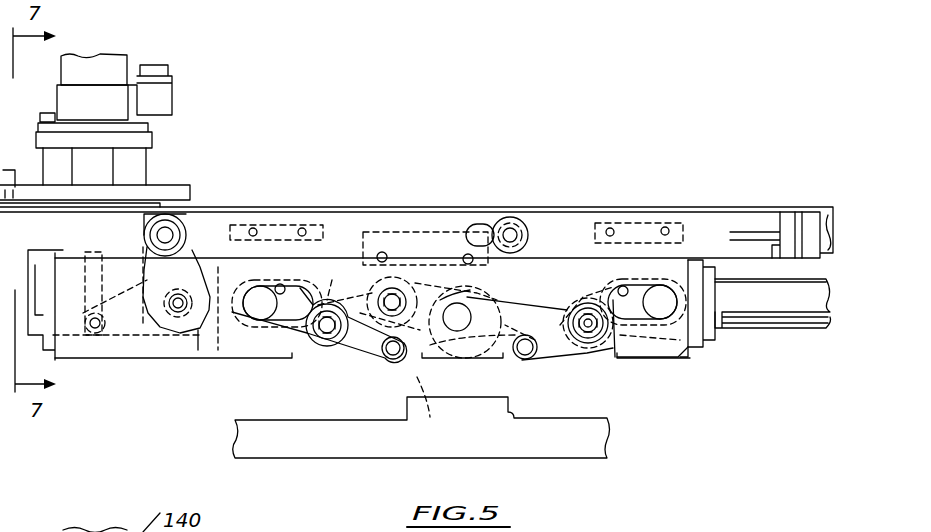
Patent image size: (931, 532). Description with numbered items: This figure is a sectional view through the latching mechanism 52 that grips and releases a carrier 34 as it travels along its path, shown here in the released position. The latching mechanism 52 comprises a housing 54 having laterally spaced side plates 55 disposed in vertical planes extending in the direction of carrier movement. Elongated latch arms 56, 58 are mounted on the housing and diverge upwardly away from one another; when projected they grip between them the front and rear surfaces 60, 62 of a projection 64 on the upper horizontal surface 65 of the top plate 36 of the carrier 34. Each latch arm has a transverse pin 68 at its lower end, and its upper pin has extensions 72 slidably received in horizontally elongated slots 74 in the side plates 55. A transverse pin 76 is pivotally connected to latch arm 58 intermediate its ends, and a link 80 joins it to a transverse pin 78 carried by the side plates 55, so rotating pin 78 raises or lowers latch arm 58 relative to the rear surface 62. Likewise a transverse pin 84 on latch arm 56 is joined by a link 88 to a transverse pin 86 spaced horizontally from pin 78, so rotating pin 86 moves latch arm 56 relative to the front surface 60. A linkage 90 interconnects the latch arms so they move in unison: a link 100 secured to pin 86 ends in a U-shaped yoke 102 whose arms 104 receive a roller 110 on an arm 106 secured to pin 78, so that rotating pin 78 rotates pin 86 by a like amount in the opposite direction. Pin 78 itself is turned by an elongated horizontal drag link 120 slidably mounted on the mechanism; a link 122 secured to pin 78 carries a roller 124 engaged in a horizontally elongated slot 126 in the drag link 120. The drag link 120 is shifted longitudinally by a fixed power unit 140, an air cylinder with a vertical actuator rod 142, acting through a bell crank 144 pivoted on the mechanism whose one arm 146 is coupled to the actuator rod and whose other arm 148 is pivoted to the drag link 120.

The carrier 34 is at (220, 447).
The top plate 36 is at (607, 440).
The latching mechanism 52 is at (575, 245).
The housing 54 is at (103, 350).
The side plates 55 is at (680, 355).
The latch arm 56 is at (377, 330).
The latch arm 58 is at (583, 357).
The front surface 60 is at (427, 398).
The rear surface 62 is at (515, 418).
The projection 64 is at (435, 405).
The upper horizontal surface 65 is at (260, 419).
The transverse pin 68 is at (522, 360).
The extensions 72 is at (253, 288).
The slots 74 is at (273, 293).
The transverse pin 76 is at (590, 298).
The transverse pin 78 is at (483, 226).
The link 80 is at (562, 262).
The transverse pin 84 is at (312, 337).
The transverse pin 86 is at (385, 298).
The link 88 is at (390, 352).
The linkage 90 is at (447, 270).
The link 100 is at (415, 275).
The yoke 102 is at (437, 402).
The arms 104 is at (472, 380).
The arm 106 is at (470, 347).
The roller 110 is at (417, 350).
The drag link 120 is at (192, 218).
The link 122 is at (541, 267).
The roller 124 is at (503, 222).
The slot 126 is at (482, 267).
The power unit 140 is at (133, 62).
The actuator rod 142 is at (72, 252).
The bell crank 144 is at (197, 347).
The arm 146 is at (128, 347).
The arm 148 is at (133, 247).